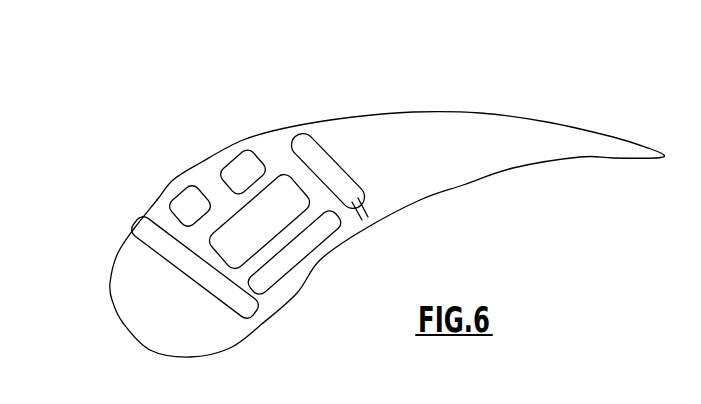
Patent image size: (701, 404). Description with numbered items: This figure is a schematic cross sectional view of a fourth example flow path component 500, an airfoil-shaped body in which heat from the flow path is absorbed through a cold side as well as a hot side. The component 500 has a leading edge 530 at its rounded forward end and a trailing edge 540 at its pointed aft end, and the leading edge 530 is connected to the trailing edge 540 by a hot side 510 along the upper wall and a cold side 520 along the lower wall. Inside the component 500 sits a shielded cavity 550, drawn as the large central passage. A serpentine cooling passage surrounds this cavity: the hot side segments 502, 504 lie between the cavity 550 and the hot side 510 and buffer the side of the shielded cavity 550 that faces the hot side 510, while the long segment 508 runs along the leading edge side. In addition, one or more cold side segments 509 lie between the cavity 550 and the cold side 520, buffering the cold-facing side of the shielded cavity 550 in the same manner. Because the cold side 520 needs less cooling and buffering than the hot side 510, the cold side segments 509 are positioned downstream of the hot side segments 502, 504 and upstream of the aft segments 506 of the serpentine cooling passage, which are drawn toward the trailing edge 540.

The flow path component 500 is at (368, 185).
The serpentine cooling passage segment 502 is at (187, 205).
The serpentine cooling passage segment 504 is at (243, 170).
The aft segment of the serpentine cooling passage 506 is at (307, 152).
The serpentine cooling passage segment 508 is at (147, 232).
The cold side segment 509 is at (283, 265).
The hot side 510 is at (353, 117).
The cold side 520 is at (420, 200).
The leading edge 530 is at (137, 336).
The trailing edge 540 is at (663, 156).
The shielded cavity 550 is at (282, 208).